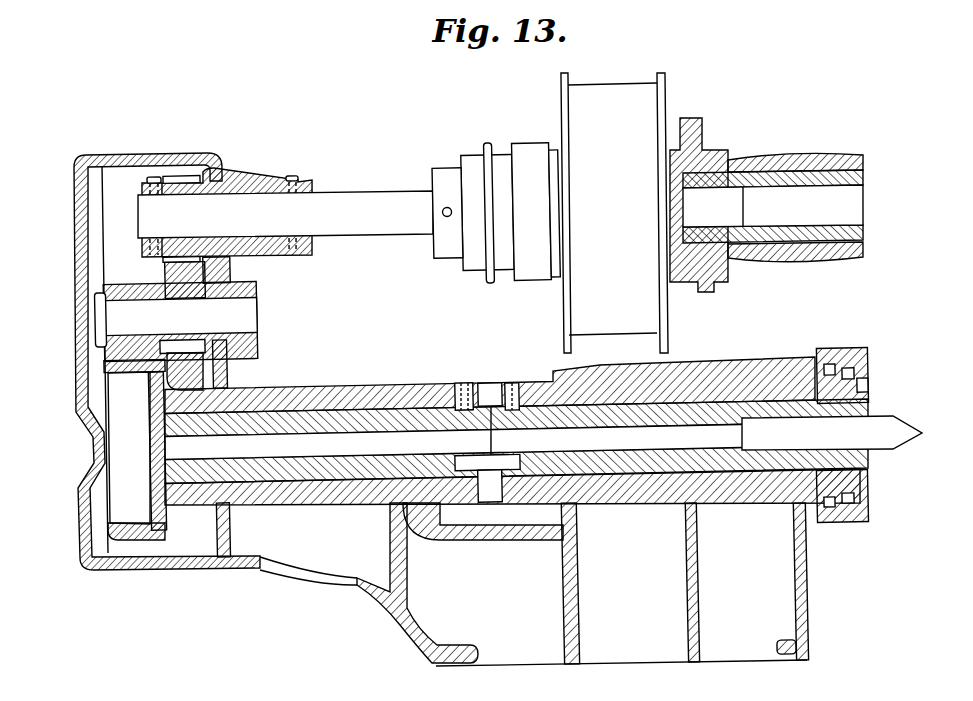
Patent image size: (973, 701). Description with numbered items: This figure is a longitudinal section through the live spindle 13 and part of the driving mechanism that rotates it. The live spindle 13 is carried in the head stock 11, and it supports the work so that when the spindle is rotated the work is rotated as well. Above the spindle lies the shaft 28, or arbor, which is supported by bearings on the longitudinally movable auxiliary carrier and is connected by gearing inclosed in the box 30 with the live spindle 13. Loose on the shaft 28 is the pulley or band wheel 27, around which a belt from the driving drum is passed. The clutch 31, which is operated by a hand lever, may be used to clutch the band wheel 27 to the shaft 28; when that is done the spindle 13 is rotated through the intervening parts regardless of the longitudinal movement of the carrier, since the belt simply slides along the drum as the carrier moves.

The head stock 11 is at (808, 588).
The live spindle 13 is at (912, 442).
The band wheel 27 is at (560, 94).
The shaft 28 is at (357, 198).
The box 30 is at (75, 280).
The clutch 31 is at (536, 283).